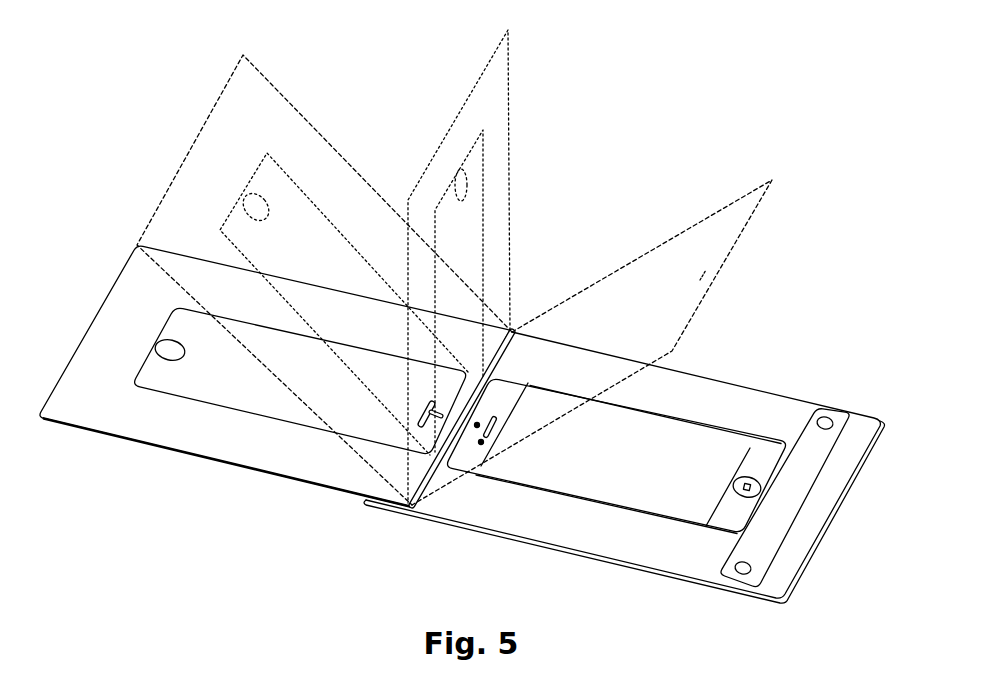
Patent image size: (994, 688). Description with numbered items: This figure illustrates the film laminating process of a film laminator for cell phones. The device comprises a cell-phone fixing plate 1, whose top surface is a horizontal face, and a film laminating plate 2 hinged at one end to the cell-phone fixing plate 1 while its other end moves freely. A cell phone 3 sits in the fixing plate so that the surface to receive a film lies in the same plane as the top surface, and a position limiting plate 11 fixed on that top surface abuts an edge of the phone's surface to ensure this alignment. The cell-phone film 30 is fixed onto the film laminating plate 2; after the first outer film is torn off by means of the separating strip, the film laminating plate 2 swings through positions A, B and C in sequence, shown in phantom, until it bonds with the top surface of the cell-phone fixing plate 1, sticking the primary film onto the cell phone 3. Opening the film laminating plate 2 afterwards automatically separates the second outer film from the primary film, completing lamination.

The cell-phone fixing plate 1 is at (725, 397).
The film laminating plate 2 is at (118, 318).
The cell phone 3 is at (580, 462).
The position limiting plate 11 is at (787, 497).
The cell-phone film 30 is at (207, 395).
The first position A is at (262, 115).
The second position B is at (502, 100).
The third position C is at (737, 217).